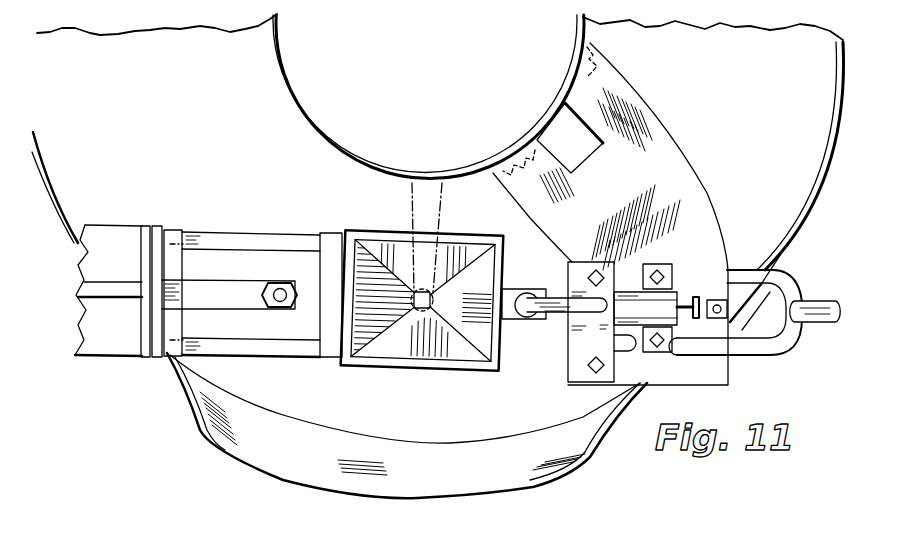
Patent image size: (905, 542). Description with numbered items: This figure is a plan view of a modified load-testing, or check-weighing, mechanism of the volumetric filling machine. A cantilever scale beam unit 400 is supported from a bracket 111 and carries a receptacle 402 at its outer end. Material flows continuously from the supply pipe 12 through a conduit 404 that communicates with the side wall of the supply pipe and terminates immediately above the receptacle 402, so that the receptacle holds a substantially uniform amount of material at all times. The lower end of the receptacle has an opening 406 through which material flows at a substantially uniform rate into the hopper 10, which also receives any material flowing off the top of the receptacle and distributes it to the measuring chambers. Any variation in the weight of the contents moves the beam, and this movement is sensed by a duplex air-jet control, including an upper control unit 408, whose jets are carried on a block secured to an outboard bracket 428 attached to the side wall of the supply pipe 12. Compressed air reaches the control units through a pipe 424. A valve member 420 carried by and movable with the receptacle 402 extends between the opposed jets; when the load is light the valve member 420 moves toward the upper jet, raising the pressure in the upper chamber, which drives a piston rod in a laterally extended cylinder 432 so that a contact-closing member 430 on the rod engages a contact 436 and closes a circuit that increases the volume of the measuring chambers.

The hopper 10 is at (781, 246).
The supply pipe 12 is at (283, 78).
The bracket 111 is at (121, 352).
The cantilever scale beam unit 400 is at (270, 228).
The receptacle 402 is at (408, 371).
The conduit 404 is at (412, 200).
The opening 406 is at (432, 297).
The upper control unit 408 is at (529, 354).
The valve member 420 is at (520, 288).
The pipe 424 is at (765, 355).
The outboard bracket 428 is at (693, 178).
The contact-closing member 430 is at (697, 297).
The cylinder 432 is at (634, 349).
The contact 436 is at (731, 313).